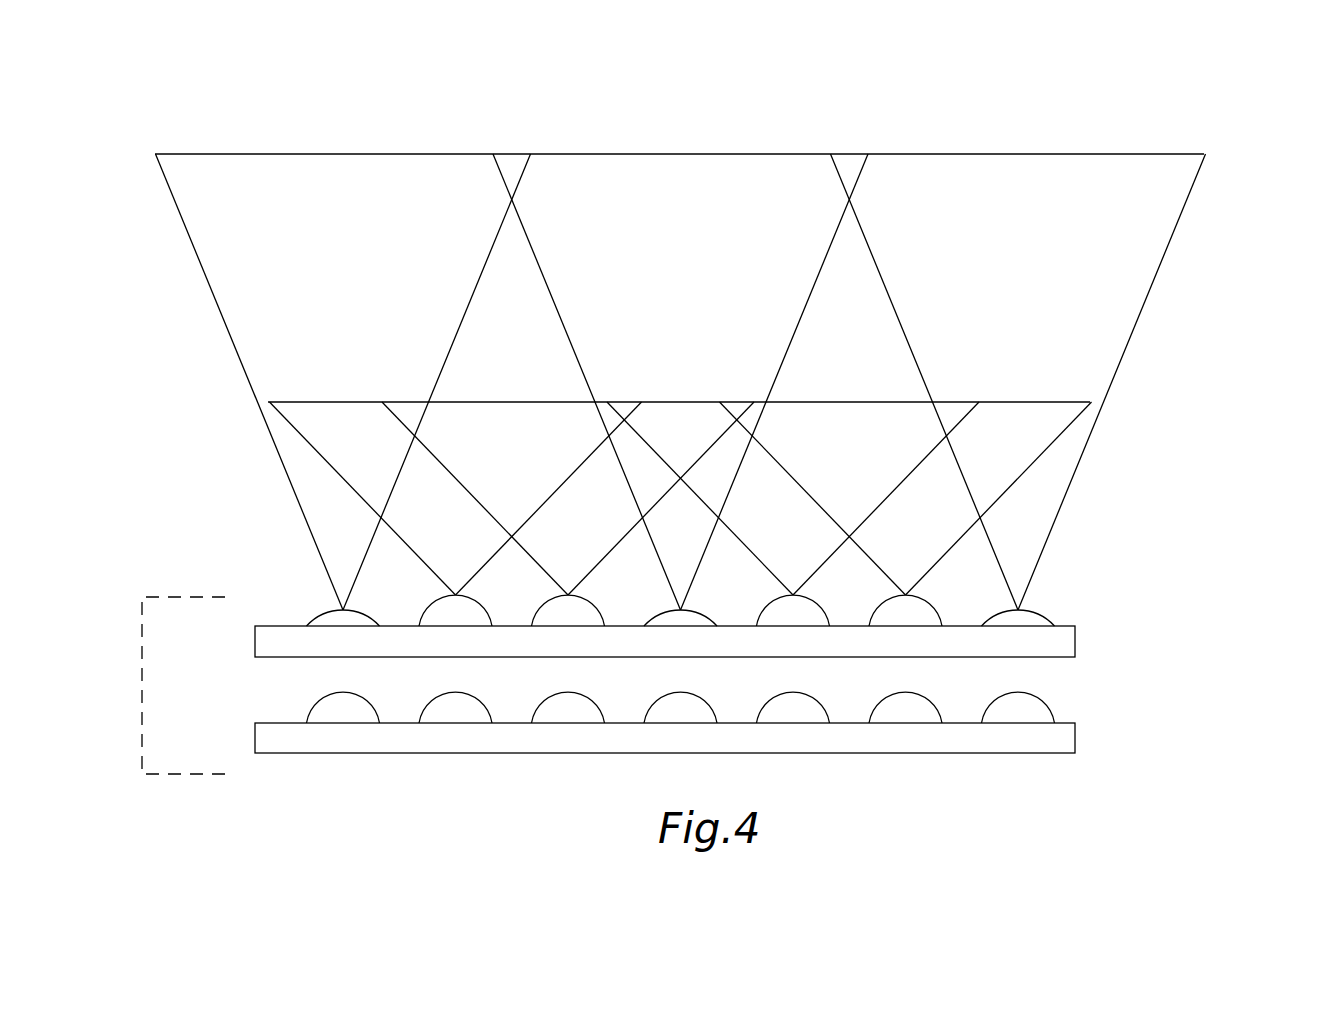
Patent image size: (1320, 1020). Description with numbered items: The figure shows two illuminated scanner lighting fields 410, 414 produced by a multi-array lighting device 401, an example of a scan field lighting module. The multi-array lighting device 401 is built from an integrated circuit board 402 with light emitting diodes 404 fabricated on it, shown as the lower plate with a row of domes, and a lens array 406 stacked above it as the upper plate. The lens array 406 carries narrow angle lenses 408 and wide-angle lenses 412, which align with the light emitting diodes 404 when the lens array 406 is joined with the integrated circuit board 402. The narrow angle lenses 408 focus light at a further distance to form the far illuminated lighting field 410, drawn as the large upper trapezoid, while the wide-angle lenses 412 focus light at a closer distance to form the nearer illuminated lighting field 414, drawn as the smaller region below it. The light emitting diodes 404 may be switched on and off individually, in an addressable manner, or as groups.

The multi-array lighting device 401 is at (185, 596).
The integrated circuit board 402 is at (272, 723).
The light emitting diodes 404 is at (1083, 693).
The lens array 406 is at (1060, 625).
The narrow angle lenses 408 is at (328, 612).
The illuminated lighting field 410 is at (1239, 78).
The wide-angle lenses 412 is at (928, 598).
The illuminated lighting field 414 is at (1025, 368).